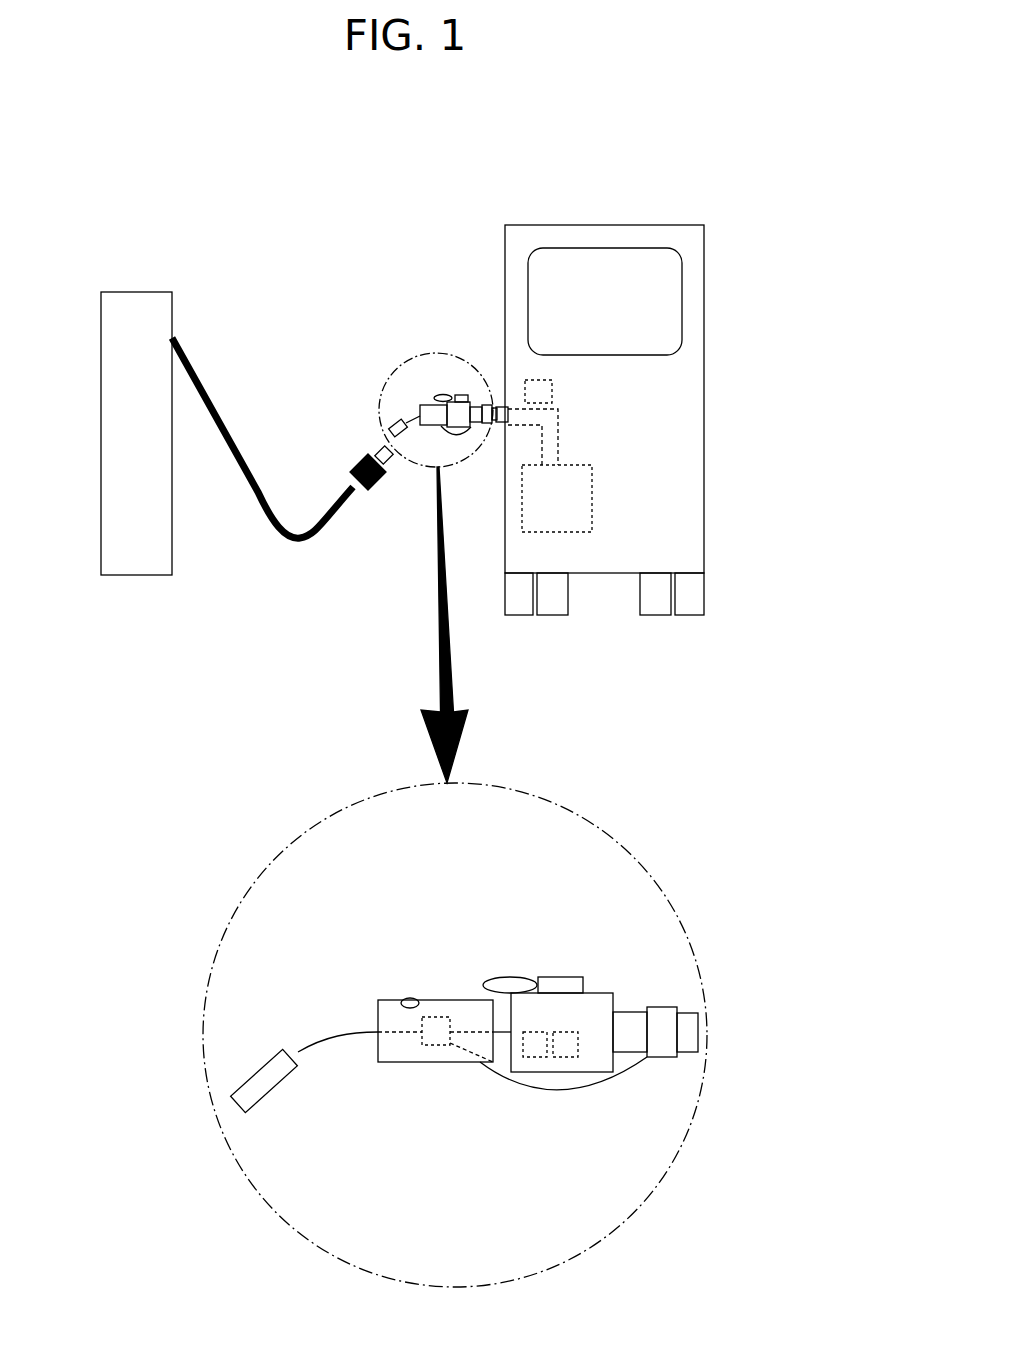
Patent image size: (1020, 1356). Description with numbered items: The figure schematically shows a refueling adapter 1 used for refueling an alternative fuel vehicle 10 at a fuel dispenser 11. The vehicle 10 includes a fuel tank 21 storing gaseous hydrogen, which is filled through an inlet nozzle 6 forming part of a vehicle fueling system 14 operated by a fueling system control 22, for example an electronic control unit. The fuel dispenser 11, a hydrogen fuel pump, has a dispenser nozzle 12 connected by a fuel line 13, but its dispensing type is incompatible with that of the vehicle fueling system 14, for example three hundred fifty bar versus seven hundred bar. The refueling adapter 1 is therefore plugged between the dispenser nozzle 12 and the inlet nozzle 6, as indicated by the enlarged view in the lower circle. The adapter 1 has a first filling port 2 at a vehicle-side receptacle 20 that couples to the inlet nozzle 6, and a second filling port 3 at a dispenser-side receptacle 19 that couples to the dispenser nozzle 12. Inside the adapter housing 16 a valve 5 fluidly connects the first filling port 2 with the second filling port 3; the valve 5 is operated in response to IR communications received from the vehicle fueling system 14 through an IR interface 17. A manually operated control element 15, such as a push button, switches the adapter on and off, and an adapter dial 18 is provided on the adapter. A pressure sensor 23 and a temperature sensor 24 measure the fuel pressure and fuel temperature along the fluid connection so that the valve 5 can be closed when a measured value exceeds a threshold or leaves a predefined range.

The refueling adapter 1 is at (366, 348).
The first filling port 2 is at (712, 1033).
The second filling port 3 is at (225, 1120).
The valve 5 is at (430, 1047).
The inlet nozzle 6 is at (493, 424).
The alternative fuel vehicle 10 is at (577, 225).
The fuel dispenser 11 is at (135, 292).
The dispenser nozzle 12 is at (357, 463).
The fuel line 13 is at (196, 378).
The vehicle fueling system 14 is at (603, 426).
The control element 15 is at (410, 997).
The adapter housing 16 is at (383, 1063).
The IR interface 17 is at (658, 1007).
The adapter dial 18 is at (560, 977).
The dispenser-side receptacle 19 is at (292, 1045).
The vehicle-side receptacle 20 is at (687, 1013).
The fuel tank 21 is at (592, 495).
The fueling system control 22 is at (552, 392).
The pressure sensor 23 is at (533, 1057).
The temperature sensor 24 is at (565, 1058).